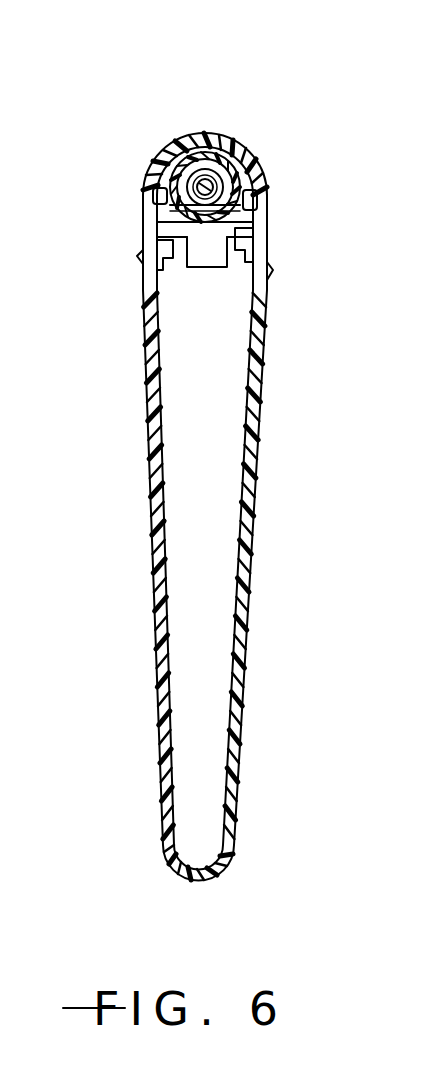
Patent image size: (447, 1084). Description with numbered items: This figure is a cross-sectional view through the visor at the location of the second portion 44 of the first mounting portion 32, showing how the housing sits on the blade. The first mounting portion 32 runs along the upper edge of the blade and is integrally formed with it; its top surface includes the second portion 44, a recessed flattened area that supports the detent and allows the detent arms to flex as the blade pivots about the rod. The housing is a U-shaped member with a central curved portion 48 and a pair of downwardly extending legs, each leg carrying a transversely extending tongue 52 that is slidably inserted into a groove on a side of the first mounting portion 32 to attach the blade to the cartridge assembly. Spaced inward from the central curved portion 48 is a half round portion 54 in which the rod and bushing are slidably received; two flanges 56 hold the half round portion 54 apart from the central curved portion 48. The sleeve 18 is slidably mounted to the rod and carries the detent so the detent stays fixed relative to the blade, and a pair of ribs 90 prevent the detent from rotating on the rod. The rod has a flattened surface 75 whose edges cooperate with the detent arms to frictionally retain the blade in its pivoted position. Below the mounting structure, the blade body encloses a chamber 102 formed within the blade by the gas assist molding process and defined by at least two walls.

The sleeve 18 is at (260, 178).
The first mounting portion 32 is at (255, 232).
The second portion 44 is at (212, 245).
The central curved portion 48 is at (192, 132).
The tongue 52 is at (263, 300).
The half round portion 54 is at (222, 160).
The flange 56 is at (252, 147).
The flattened surface 75 is at (143, 178).
The rib 90 is at (260, 223).
The chamber 102 is at (205, 497).